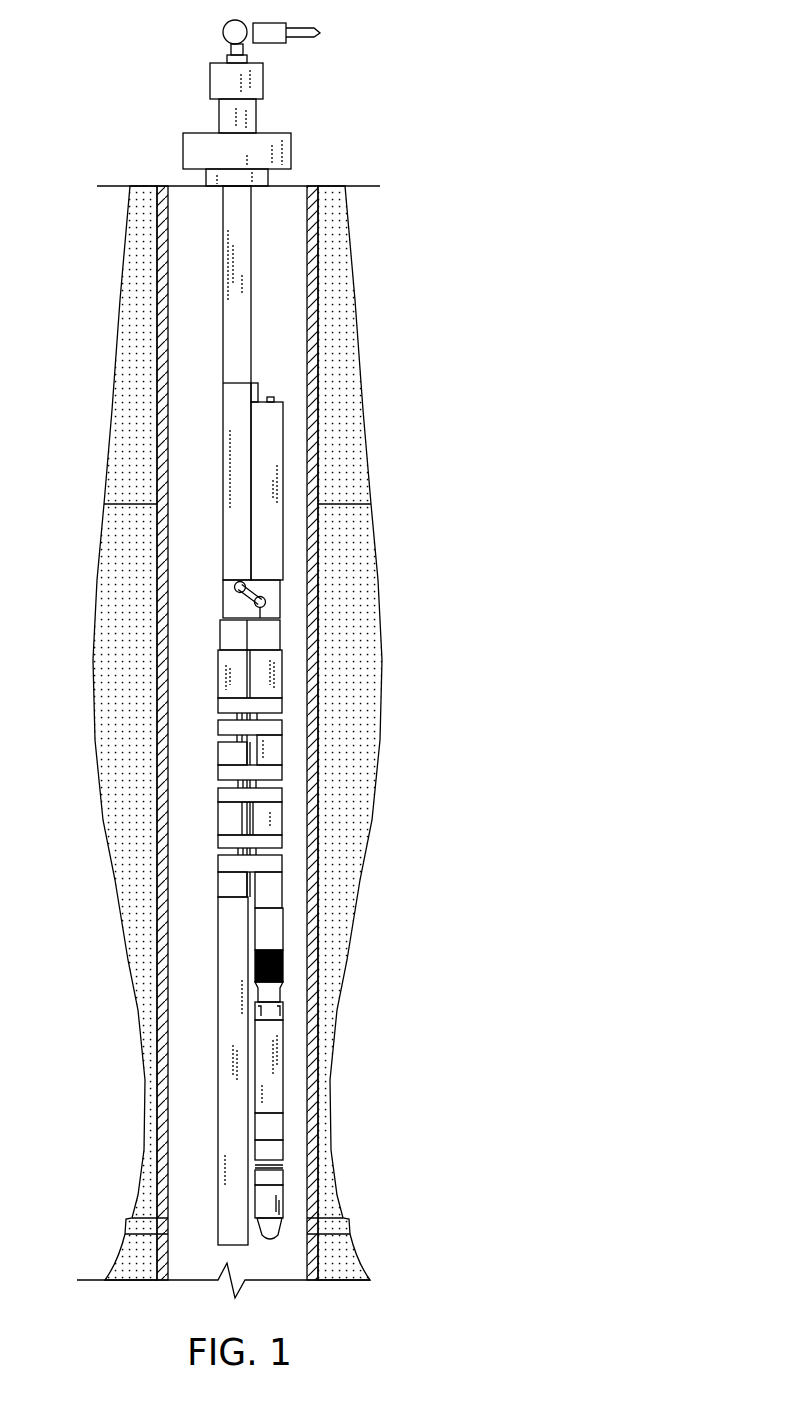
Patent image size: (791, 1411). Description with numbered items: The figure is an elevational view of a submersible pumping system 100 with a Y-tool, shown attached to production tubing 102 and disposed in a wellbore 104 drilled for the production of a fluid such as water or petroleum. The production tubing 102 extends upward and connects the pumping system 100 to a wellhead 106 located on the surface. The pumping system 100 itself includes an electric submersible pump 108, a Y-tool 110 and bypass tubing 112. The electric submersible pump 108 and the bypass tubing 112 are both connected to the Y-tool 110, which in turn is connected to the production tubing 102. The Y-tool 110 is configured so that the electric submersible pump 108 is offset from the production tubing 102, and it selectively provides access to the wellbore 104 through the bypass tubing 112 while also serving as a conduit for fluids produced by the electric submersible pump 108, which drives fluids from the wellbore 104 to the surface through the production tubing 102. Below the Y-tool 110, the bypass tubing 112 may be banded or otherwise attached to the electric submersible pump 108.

The pumping system 100 is at (314, 659).
The production tubing 102 is at (247, 233).
The wellbore 104 is at (308, 302).
The wellhead 106 is at (227, 81).
The electric submersible pump 108 is at (270, 1122).
The Y-tool 110 is at (283, 555).
The bypass tubing 112 is at (218, 1093).